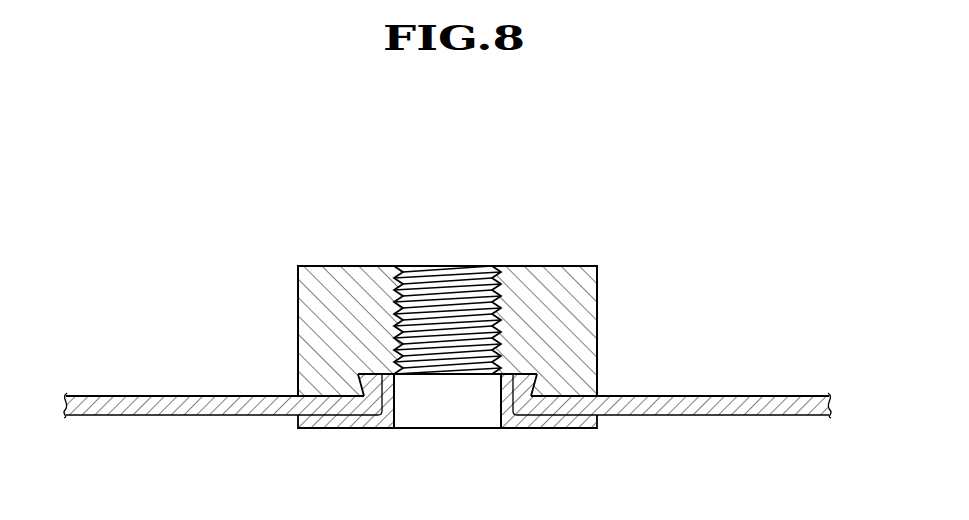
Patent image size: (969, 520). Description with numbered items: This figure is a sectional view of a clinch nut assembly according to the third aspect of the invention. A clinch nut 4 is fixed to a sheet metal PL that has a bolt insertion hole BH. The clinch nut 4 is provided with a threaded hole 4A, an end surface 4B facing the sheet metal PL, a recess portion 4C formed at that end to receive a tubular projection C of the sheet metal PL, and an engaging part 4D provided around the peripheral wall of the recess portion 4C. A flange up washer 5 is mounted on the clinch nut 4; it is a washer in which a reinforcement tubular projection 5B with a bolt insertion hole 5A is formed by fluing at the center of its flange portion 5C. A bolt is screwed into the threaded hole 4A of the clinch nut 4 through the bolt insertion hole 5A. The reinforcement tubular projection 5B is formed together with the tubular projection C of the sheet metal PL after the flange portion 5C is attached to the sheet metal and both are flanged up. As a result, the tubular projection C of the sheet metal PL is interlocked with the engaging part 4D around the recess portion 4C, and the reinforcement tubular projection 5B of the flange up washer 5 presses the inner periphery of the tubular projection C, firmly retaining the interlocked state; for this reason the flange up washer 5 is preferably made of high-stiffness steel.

The clinch nut 4 is at (625, 290).
The threaded hole 4A is at (450, 300).
The end surface 4B is at (305, 428).
The recess portion 4C is at (447, 375).
The engaging part 4D is at (352, 390).
The flange up washer 5 is at (562, 430).
The bolt insertion hole 5A is at (404, 428).
The reinforcement tubular projection 5B is at (386, 374).
The flange portion 5C is at (340, 428).
The bolt insertion hole BH is at (492, 402).
The tubular projection C is at (524, 374).
The sheet metal PL is at (787, 396).